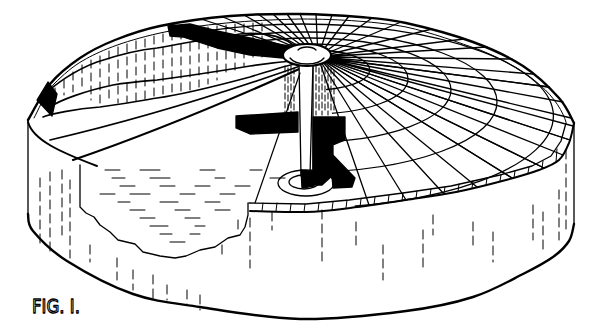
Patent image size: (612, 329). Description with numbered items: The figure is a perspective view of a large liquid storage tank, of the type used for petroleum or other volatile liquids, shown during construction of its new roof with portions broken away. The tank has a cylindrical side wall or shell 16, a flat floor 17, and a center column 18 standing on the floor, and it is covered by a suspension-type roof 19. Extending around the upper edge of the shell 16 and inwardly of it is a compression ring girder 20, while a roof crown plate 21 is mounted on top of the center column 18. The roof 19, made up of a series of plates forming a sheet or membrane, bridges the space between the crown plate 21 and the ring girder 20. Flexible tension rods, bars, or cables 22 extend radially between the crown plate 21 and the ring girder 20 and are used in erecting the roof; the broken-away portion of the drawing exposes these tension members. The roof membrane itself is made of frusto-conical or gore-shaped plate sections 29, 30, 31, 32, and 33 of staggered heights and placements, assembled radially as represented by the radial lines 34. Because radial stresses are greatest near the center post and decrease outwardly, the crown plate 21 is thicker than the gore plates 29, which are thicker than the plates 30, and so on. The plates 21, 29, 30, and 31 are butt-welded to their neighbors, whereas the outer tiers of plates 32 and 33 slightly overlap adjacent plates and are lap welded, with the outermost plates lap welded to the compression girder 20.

The cylindrical side wall or shell 16 is at (526, 262).
The flat floor 17 is at (192, 202).
The center column 18 is at (283, 142).
The suspension-type roof 19 is at (518, 58).
The compression ring girder 20 is at (270, 188).
The roof crown plate 21 is at (283, 80).
The flexible tension rods, bars, or cables 22 is at (118, 120).
The gore-shaped plate section 29 is at (333, 68).
The gore-shaped plate section 30 is at (360, 100).
The gore-shaped plate section 31 is at (390, 133).
The gore-shaped plate section 32 is at (455, 178).
The gore-shaped plate section 33 is at (444, 150).
The radial lines 34 is at (305, 116).